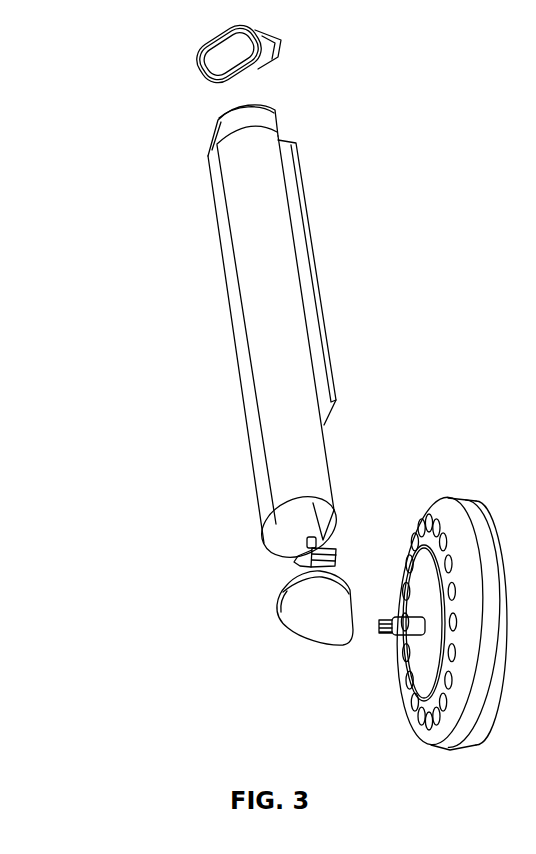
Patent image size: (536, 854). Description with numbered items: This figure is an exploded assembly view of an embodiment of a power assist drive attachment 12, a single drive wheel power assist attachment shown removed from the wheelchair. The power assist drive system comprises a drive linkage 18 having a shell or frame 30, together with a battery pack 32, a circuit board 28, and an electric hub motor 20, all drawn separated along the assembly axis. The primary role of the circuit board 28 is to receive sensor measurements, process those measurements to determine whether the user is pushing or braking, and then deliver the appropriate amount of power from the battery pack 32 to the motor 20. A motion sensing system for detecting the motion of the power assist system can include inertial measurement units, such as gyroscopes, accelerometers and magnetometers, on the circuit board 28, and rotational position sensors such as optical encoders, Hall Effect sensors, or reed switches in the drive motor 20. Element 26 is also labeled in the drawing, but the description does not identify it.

The power assist drive attachment 12 is at (360, 320).
The drive linkage 18 is at (277, 213).
The electric hub motor 20 is at (423, 668).
The pin 26 is at (380, 625).
The circuit board 28 is at (287, 574).
The shell or frame 30 is at (237, 320).
The battery pack 32 is at (237, 122).